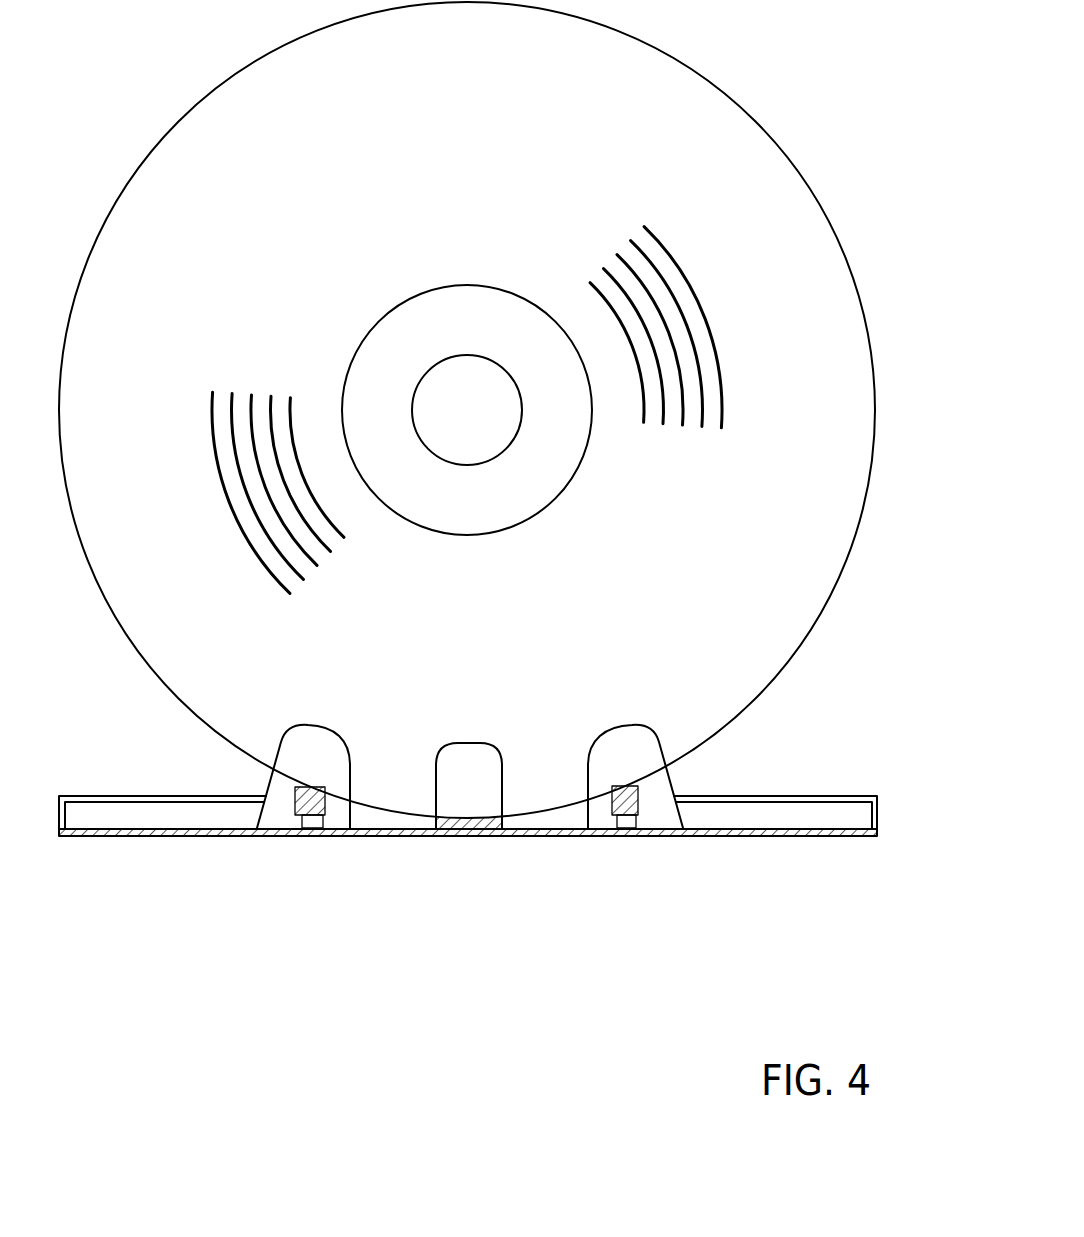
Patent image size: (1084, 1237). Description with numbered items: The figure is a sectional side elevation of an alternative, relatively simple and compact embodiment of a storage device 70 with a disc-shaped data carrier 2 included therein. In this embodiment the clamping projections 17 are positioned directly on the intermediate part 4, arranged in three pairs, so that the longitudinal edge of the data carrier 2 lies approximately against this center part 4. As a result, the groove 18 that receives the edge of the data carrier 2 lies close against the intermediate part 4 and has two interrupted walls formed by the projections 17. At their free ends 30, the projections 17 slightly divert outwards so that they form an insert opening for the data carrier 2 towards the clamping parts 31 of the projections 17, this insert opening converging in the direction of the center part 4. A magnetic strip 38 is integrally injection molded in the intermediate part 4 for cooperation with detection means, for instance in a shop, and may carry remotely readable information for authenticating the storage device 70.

The storage device 70 is at (777, 88).
The data carrier 2 is at (477, 99).
The intermediate part 4 is at (790, 836).
The groove 18 is at (730, 752).
The free end 30 is at (628, 747).
The clamping projection 17 is at (655, 797).
The clamping part 31 is at (467, 783).
The magnetic strip 38 is at (308, 837).